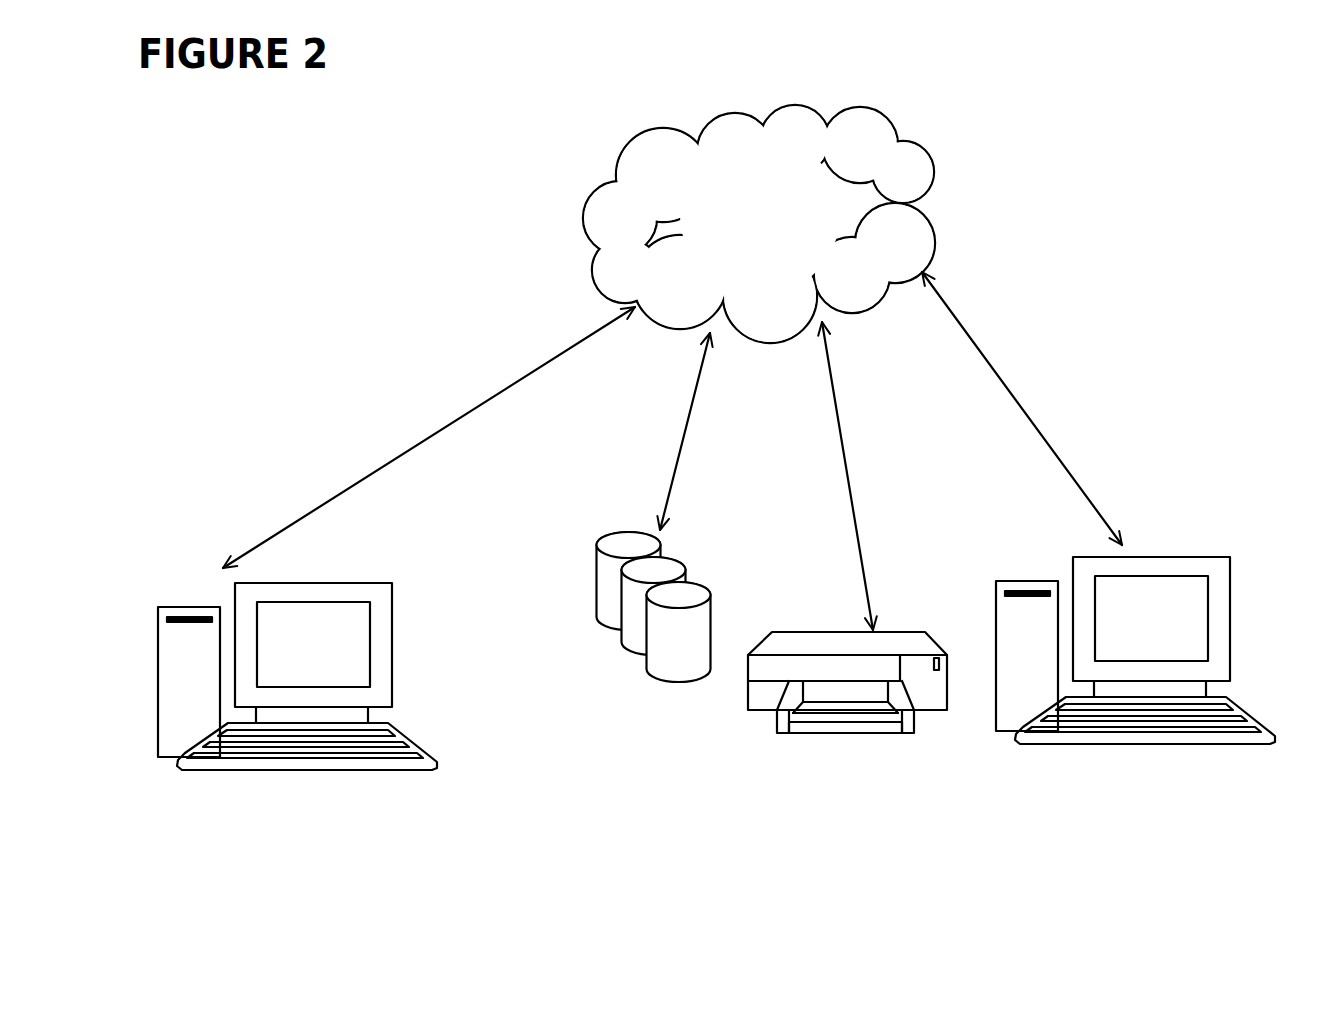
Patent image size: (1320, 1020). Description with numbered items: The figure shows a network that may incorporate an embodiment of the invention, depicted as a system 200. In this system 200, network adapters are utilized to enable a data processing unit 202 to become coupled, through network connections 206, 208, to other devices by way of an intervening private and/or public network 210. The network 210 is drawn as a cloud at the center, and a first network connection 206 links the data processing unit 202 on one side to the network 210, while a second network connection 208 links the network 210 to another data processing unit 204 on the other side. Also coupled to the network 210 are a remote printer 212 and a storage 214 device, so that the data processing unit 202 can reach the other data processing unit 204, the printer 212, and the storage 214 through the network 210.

The system 200 is at (1043, 88).
The data processing unit 202 is at (297, 737).
The data processing unit 204 is at (1135, 705).
The network connection 206 is at (429, 437).
The network connection 208 is at (1065, 408).
The network 210 is at (759, 224).
The printer 212 is at (847, 707).
The storage 214 is at (630, 635).